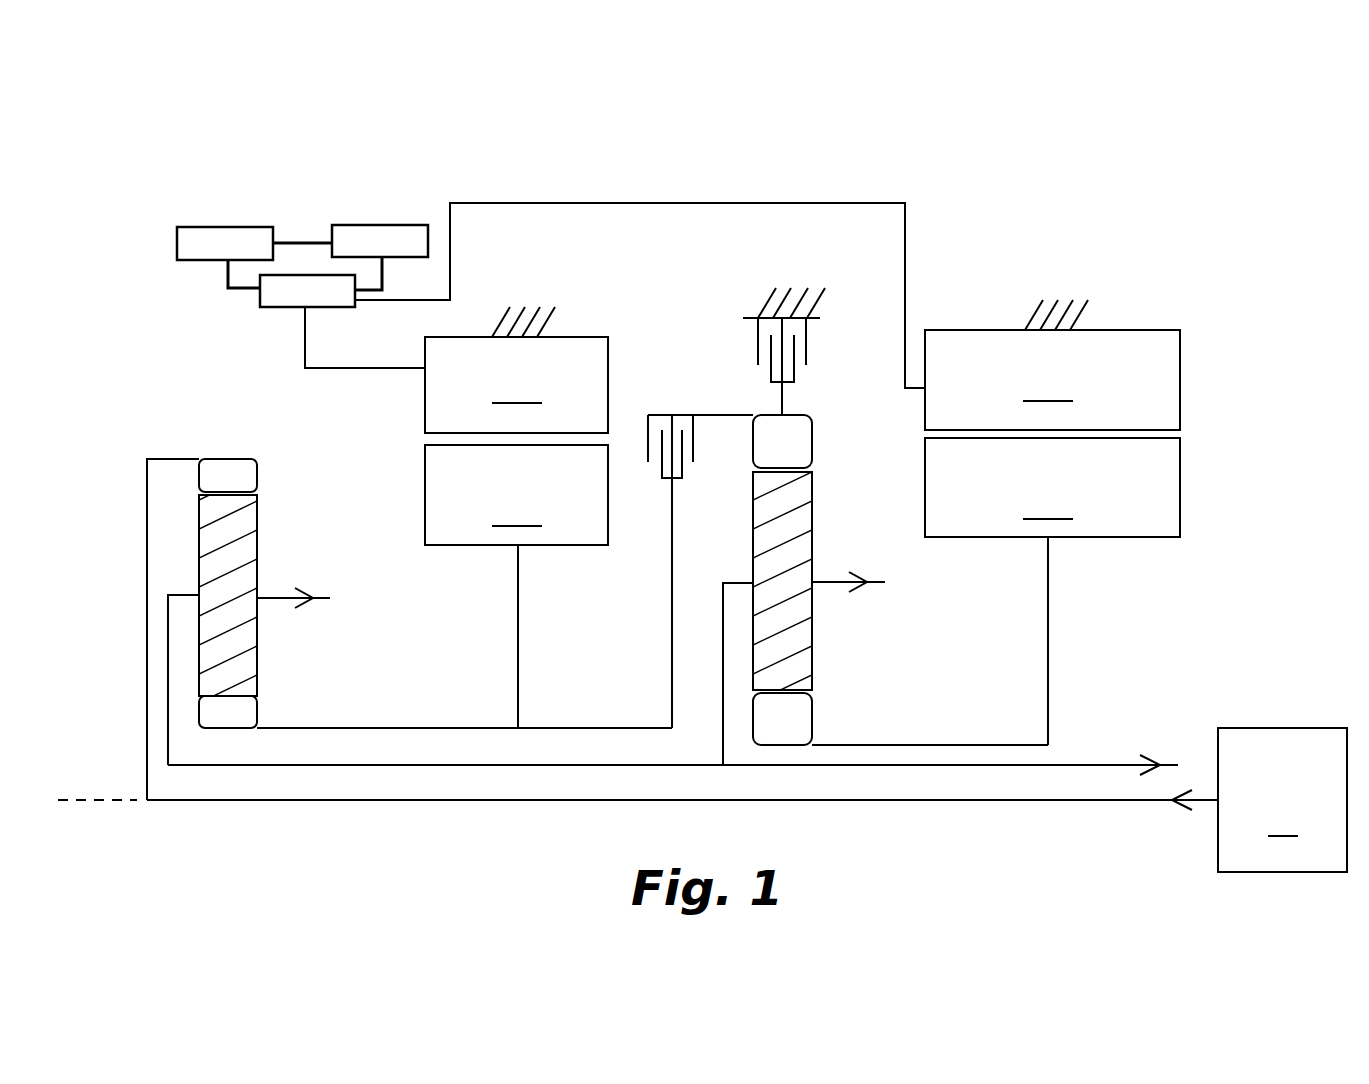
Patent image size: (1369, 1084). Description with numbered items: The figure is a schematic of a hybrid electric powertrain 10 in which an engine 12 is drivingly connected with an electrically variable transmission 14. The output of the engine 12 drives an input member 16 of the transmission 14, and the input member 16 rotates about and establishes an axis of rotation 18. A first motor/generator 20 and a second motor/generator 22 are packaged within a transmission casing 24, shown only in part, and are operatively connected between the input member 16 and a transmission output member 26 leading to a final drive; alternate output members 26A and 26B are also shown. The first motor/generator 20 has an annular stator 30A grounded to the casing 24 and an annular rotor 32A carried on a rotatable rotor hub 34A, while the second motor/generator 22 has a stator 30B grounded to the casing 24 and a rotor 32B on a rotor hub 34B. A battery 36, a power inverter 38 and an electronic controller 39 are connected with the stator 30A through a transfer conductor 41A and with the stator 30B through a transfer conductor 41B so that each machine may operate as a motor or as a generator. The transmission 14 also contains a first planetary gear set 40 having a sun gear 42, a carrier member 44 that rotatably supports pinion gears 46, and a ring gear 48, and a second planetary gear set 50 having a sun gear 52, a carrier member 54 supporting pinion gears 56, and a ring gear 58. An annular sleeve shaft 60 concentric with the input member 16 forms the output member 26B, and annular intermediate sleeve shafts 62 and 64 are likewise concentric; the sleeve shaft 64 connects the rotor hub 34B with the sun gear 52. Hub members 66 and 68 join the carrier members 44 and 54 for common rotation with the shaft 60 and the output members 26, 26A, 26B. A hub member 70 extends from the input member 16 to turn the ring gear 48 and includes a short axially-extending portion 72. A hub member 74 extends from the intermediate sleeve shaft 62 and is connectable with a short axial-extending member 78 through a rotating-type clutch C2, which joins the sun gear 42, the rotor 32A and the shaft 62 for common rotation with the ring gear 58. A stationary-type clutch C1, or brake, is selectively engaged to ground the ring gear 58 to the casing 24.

The powertrain 10 is at (1048, 188).
The engine 12 is at (1282, 800).
The electrically variable transmission 14 is at (154, 341).
The input member 16 is at (1130, 802).
The axis of rotation 18 is at (108, 812).
The first motor/generator 20 is at (631, 356).
The second motor/generator 22 is at (1198, 469).
The transmission casing 24 is at (523, 322).
The transmission output member 26 is at (280, 596).
The alternate output member 26A is at (832, 582).
The output member 26B is at (1092, 763).
The stator 30A is at (498, 327).
The stator 30B is at (1030, 322).
The rotor 32A is at (516, 495).
The rotor 32B is at (1052, 487).
The rotor hub 34A is at (520, 630).
The rotor hub 34B is at (1050, 610).
The battery 36 is at (220, 227).
The power inverter 38 is at (260, 300).
The electronic controller 39 is at (378, 225).
The first planetary gear set 40 is at (298, 660).
The transfer conductor 41A is at (368, 368).
The transfer conductor 41B is at (905, 262).
The sun gear 42 is at (258, 710).
The carrier member 44 is at (175, 595).
The pinion gears 46 is at (248, 652).
The ring gear 48 is at (257, 475).
The second planetary gear set 50 is at (858, 652).
The sun gear 52 is at (813, 722).
The carrier member 54 is at (733, 583).
The pinion gears 56 is at (812, 628).
The ring gear 58 is at (812, 445).
The sleeve shaft 60 is at (572, 767).
The intermediate sleeve shaft 62 is at (430, 727).
The intermediate sleeve shaft 64 is at (965, 743).
The hub member 66 is at (168, 657).
The hub member 68 is at (722, 642).
The hub member 70 is at (147, 548).
The axially-extending portion 72 is at (165, 458).
The hub member 74 is at (668, 574).
The axial-extending member 78 is at (722, 414).
The stationary-type clutch C1 is at (831, 341).
The rotating-type clutch C2 is at (646, 484).